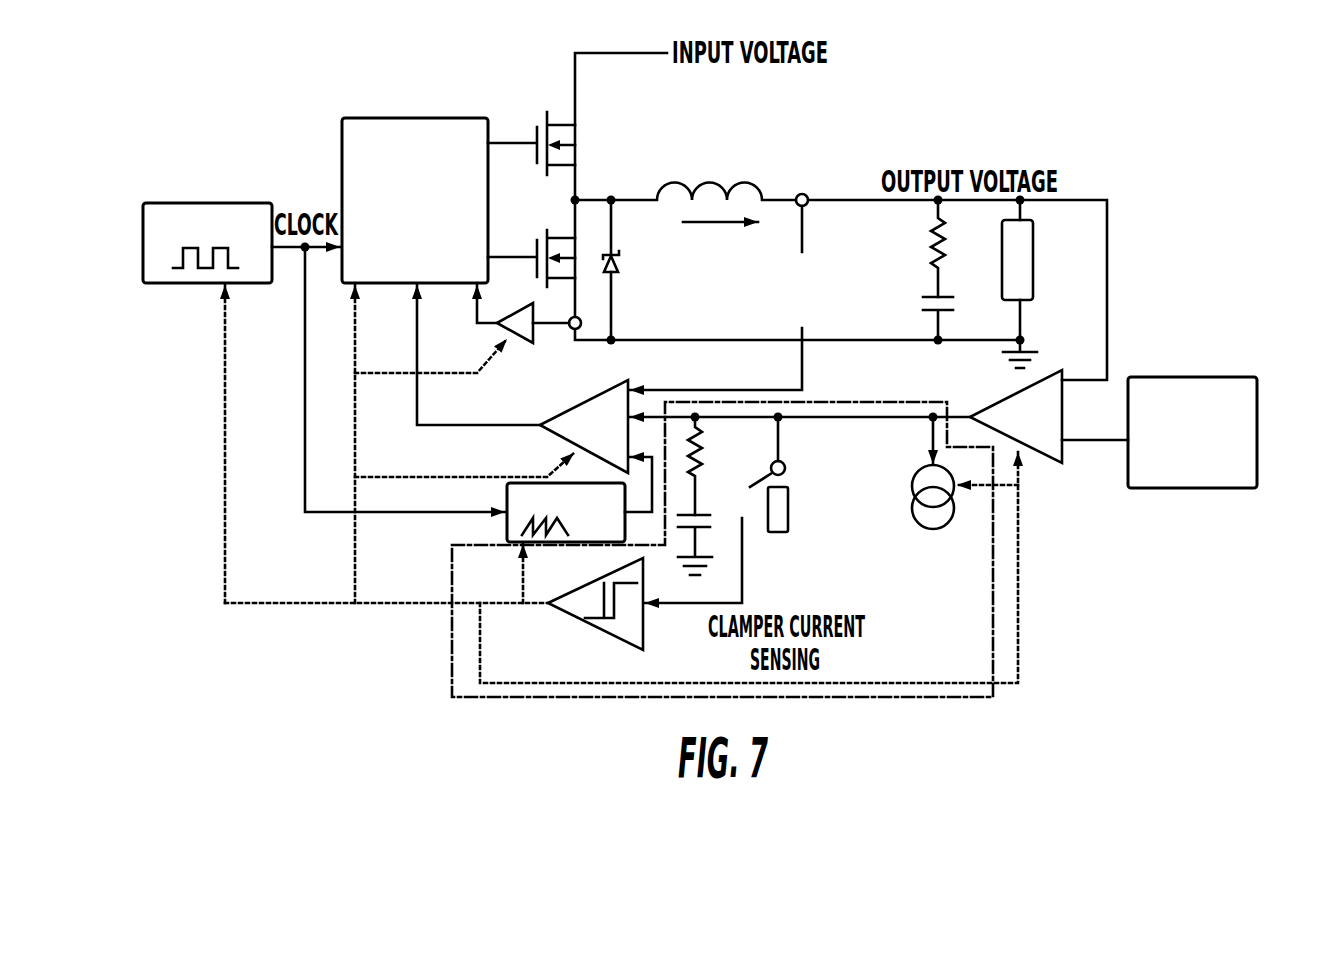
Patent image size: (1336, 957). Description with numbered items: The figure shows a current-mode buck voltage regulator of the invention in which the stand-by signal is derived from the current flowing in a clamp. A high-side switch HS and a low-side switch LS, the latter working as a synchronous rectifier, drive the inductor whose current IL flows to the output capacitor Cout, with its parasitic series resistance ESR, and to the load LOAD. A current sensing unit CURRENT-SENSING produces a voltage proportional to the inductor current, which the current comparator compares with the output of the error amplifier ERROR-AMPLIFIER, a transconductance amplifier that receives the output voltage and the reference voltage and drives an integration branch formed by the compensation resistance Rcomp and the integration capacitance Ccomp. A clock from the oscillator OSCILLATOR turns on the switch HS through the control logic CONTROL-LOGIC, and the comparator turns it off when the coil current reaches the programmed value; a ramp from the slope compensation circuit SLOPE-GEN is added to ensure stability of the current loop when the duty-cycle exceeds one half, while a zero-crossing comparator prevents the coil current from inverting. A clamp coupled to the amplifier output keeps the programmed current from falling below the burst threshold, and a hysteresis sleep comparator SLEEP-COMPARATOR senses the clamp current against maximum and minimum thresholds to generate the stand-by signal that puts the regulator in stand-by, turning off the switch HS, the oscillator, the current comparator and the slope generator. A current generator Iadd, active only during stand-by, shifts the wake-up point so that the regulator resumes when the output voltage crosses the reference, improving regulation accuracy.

The oscillator OSCILLATOR is at (207, 243).
The control logic CONTROL-LOGIC is at (415, 200).
The slope compensation circuit SLOPE-GEN is at (566, 512).
The load LOAD is at (1050, 284).
The error amplifier ERROR-AMPLIFIER is at (1049, 456).
The sleep comparator SLEEP-COMPARATOR is at (617, 622).
The high-side switch HS is at (550, 143).
The low-side switch LS is at (531, 240).
The inductor current IL is at (685, 225).
The current sensing unit CURRENT-SENSING is at (741, 298).
The parasitic series resistance ESR is at (916, 248).
The output capacitor Cout is at (914, 315).
The current generator Iadd is at (932, 527).
The compensation resistance Rcomp is at (729, 466).
The integration capacitance Ccomp is at (721, 532).